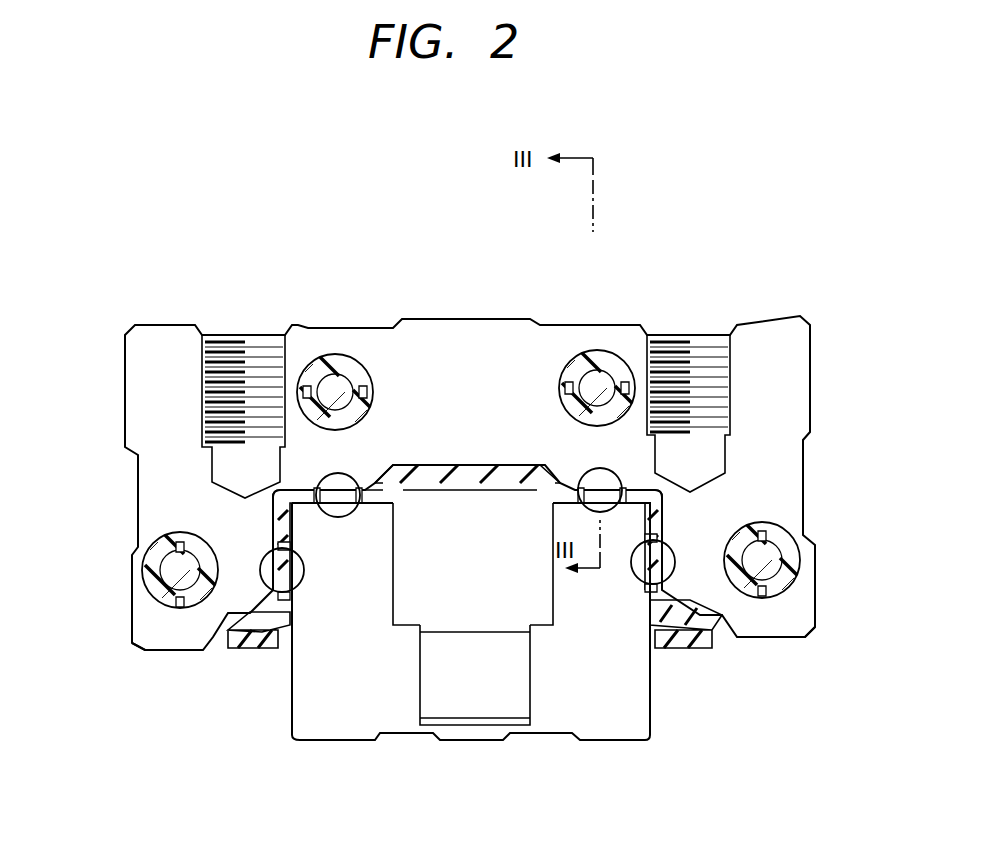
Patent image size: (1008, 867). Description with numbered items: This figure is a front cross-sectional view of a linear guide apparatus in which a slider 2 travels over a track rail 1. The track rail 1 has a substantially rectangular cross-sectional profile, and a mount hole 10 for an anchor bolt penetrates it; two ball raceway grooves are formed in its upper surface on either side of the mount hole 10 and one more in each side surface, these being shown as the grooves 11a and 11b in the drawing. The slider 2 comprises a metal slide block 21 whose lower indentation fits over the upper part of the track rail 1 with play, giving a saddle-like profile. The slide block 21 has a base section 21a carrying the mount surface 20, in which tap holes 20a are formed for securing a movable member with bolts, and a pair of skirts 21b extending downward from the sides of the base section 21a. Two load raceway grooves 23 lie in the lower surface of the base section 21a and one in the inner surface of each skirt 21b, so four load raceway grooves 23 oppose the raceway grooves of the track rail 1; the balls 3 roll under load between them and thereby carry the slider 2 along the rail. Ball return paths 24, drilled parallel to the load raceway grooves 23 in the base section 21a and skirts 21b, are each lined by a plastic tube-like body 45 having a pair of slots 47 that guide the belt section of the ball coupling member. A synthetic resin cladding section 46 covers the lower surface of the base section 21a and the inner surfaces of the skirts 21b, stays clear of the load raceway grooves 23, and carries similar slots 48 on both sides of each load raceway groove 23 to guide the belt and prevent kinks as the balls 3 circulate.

The track rail 1 is at (618, 742).
The slider 2 is at (816, 318).
The balls 3 is at (668, 560).
The mount hole 10 is at (432, 700).
The rail 11a is at (288, 495).
The rail 11b is at (300, 742).
The mount surface 20 is at (722, 330).
The tap holes 20a is at (700, 405).
The slide block 21 is at (812, 345).
The base section 21a is at (415, 318).
The skirts 21b is at (140, 650).
The load raceway grooves 23 is at (282, 594).
The ball return paths 24 is at (165, 585).
The tube-like body 45 is at (150, 575).
The cladding section 46 is at (245, 652).
The slots 47 is at (565, 392).
The slots 48 is at (640, 576).